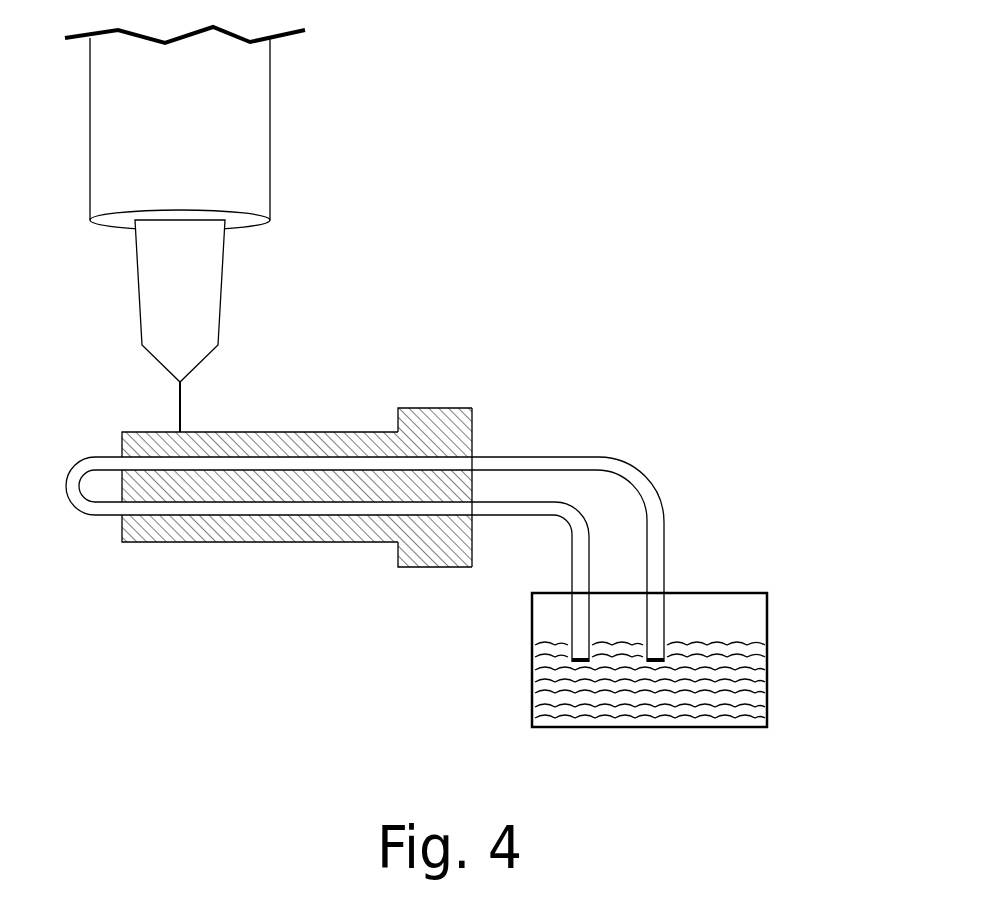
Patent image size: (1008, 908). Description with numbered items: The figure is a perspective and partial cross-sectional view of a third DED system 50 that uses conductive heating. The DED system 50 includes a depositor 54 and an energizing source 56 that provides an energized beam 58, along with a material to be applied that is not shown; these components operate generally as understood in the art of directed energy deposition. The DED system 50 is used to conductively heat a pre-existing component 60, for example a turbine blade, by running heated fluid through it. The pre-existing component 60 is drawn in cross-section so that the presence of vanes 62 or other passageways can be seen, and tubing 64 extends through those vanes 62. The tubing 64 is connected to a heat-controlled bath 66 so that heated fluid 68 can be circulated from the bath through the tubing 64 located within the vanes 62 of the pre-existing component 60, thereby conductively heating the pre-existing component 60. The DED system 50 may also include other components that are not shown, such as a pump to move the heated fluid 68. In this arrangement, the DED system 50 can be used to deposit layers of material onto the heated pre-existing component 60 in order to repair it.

The DED system 50 is at (576, 162).
The depositor 54 is at (225, 287).
The energizing source 56 is at (270, 107).
The energized beam 58 is at (182, 404).
The pre-existing component 60 is at (435, 408).
The vanes 62 is at (478, 451).
The tubing 64 is at (609, 457).
The heat-controlled bath 66 is at (767, 665).
The heated fluid 68 is at (721, 707).